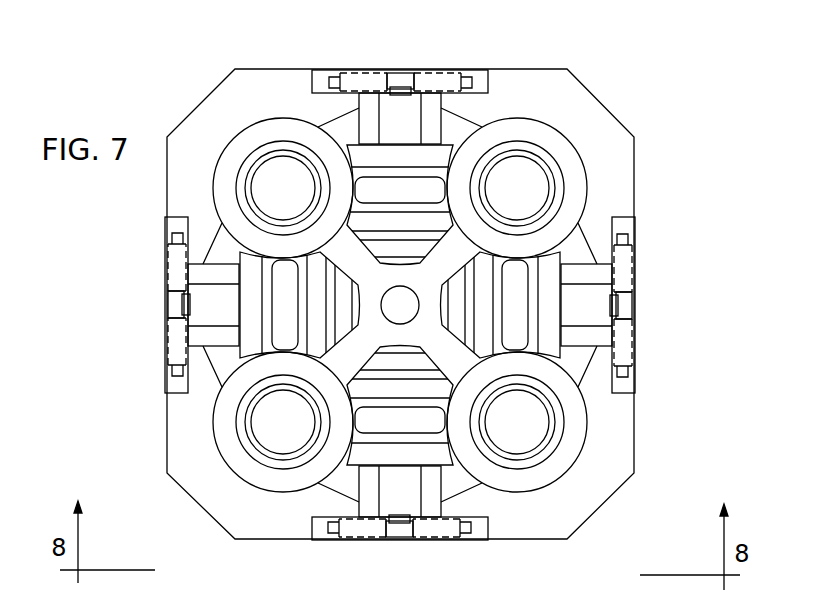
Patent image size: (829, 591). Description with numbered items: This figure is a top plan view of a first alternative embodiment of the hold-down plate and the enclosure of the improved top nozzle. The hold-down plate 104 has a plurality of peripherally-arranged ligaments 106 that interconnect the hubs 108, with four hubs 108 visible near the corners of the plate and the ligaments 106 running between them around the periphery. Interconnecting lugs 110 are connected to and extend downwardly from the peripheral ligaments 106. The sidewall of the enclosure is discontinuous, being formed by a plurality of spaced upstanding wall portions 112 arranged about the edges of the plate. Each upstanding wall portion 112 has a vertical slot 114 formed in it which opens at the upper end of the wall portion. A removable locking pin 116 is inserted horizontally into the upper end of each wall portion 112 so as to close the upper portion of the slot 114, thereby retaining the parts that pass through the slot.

The hold-down plate 104 is at (592, 159).
The peripherally-arranged ligaments 106 is at (485, 122).
The hubs 108 is at (222, 152).
The interconnecting lugs 110 is at (410, 117).
The upstanding wall portions 112 is at (334, 72).
The vertical slot 114 is at (397, 72).
The removable locking pin 116 is at (408, 84).